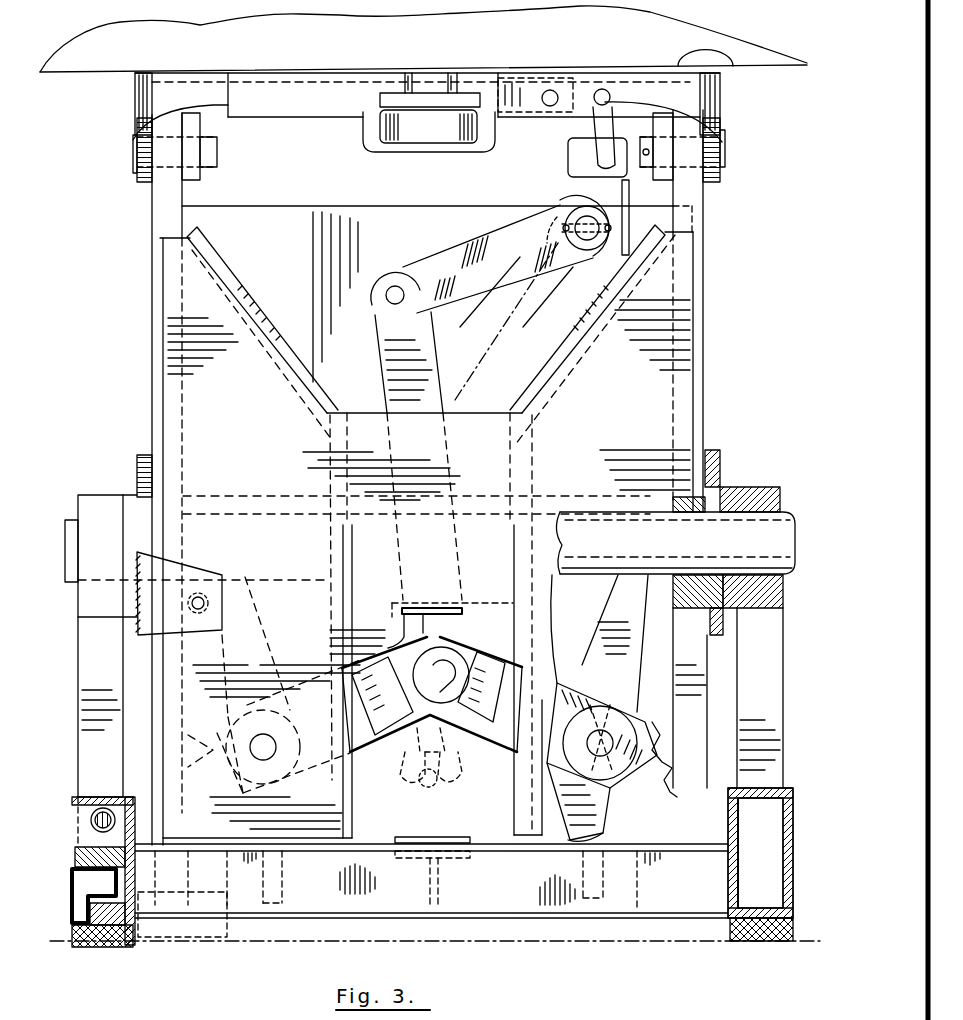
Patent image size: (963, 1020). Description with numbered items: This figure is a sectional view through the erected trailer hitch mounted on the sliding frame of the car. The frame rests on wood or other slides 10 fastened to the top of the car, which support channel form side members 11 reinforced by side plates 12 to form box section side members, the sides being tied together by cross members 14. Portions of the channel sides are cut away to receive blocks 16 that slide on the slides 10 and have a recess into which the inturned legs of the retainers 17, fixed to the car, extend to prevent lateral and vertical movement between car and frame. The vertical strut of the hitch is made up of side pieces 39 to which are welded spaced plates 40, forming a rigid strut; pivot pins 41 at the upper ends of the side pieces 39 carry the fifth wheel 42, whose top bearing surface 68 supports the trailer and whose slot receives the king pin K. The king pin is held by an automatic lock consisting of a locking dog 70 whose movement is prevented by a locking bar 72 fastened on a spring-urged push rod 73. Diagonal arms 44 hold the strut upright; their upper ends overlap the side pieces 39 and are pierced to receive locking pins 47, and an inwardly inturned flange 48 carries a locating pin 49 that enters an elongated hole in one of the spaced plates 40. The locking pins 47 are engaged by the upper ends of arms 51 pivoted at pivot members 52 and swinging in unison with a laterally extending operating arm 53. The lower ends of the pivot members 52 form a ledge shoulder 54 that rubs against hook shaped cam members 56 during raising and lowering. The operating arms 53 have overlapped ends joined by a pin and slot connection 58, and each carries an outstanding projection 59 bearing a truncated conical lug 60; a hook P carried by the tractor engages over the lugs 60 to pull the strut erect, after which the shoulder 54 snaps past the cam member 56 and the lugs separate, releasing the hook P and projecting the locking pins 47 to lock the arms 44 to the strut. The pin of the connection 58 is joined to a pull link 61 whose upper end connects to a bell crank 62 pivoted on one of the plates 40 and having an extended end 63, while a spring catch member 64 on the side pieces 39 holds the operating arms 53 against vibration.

The slides 10 is at (112, 948).
The channel form side members 11 is at (738, 812).
The side plates 12 is at (783, 848).
The cross members 14 is at (560, 918).
The blocks 16 is at (75, 856).
The retainers 17 is at (70, 893).
The side pieces 39 is at (150, 218).
The spaced plates 40 is at (248, 206).
The pivot pins 41 is at (133, 155).
The fifth wheel 42 is at (135, 102).
The diagonal arms 44 is at (728, 698).
The locking pins 47 is at (68, 520).
The inwardly inturned flange 48 is at (178, 635).
The locating pin 49 is at (200, 612).
The arms 51 is at (575, 655).
The pivot members 52 is at (638, 722).
The operating arm 53 is at (514, 755).
The ledge shoulder 54 is at (570, 836).
The hook shaped cam members 56 is at (600, 838).
The pin and slot connection 58 is at (418, 606).
The outstanding projection 59 is at (368, 745).
The truncated conical lugs 60 is at (386, 655).
The pull link 61 is at (383, 404).
The bell crank 62 is at (420, 262).
The extended end 63 is at (600, 178).
The spring catch member 64 is at (663, 763).
The top bearing surface 68 is at (735, 63).
The locking dog 70 is at (388, 90).
The locking bar 72 is at (545, 110).
The push rod 73 is at (552, 90).
The king pin K is at (435, 147).
The hook P is at (418, 780).